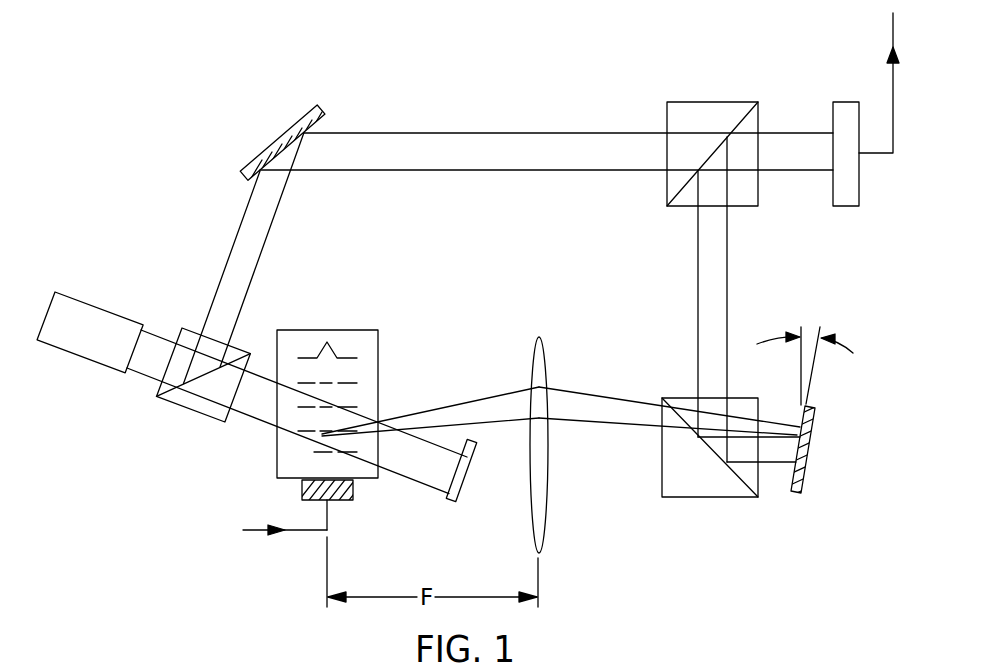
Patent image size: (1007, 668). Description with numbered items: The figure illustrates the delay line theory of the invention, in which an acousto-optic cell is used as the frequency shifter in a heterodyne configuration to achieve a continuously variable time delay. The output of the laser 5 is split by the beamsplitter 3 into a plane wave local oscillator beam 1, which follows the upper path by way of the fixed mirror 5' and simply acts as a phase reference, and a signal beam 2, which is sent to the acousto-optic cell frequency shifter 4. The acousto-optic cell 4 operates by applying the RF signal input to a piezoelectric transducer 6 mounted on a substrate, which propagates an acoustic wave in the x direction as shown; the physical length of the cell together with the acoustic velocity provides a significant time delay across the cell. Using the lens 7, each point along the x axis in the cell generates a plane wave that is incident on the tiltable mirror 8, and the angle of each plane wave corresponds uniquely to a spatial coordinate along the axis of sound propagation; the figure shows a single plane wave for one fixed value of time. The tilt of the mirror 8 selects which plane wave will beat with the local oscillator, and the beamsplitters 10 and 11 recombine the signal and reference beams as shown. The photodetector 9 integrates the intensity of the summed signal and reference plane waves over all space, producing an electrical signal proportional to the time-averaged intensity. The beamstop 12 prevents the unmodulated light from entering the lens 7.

The local oscillator beam 1 is at (465, 132).
The signal beam 2 is at (252, 420).
The beamsplitter 3 is at (199, 417).
The acousto-optic cell frequency shifter 4 is at (370, 330).
The laser 5 is at (90, 321).
The mirror 5' is at (252, 118).
The piezoelectric transducer 6 is at (338, 500).
The lens 7 is at (532, 366).
The tiltable mirror 8 is at (806, 478).
The photodetector 9 is at (889, 240).
The beamsplitter 10 is at (745, 498).
The beamsplitter 11 is at (750, 102).
The beamstop 12 is at (448, 497).